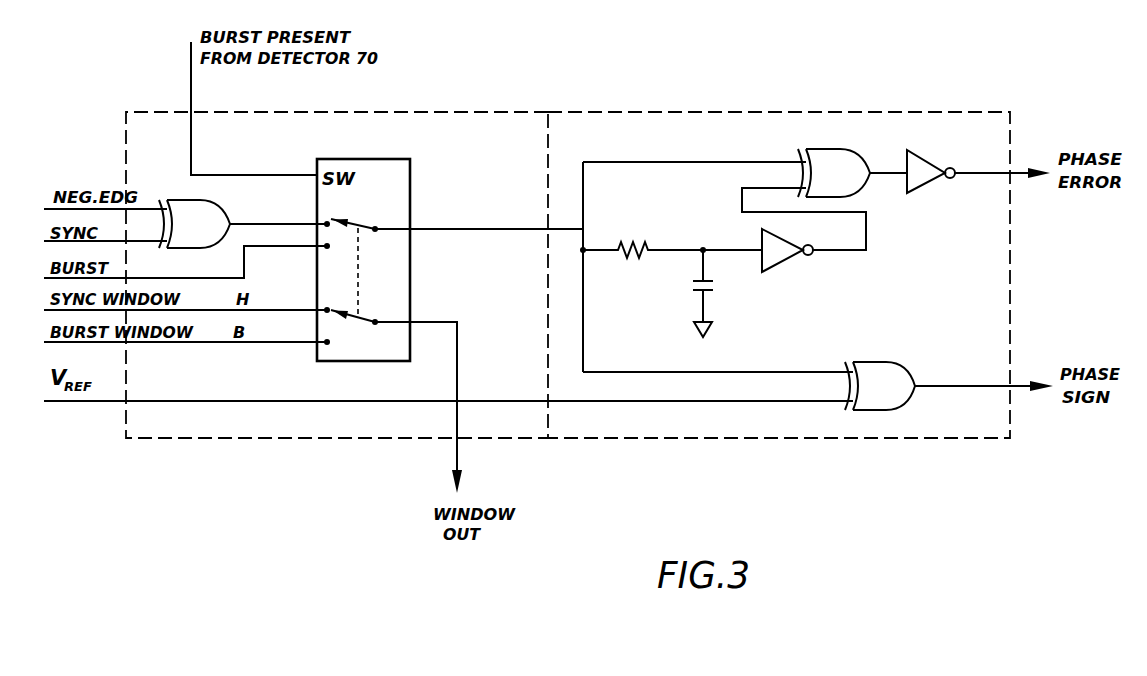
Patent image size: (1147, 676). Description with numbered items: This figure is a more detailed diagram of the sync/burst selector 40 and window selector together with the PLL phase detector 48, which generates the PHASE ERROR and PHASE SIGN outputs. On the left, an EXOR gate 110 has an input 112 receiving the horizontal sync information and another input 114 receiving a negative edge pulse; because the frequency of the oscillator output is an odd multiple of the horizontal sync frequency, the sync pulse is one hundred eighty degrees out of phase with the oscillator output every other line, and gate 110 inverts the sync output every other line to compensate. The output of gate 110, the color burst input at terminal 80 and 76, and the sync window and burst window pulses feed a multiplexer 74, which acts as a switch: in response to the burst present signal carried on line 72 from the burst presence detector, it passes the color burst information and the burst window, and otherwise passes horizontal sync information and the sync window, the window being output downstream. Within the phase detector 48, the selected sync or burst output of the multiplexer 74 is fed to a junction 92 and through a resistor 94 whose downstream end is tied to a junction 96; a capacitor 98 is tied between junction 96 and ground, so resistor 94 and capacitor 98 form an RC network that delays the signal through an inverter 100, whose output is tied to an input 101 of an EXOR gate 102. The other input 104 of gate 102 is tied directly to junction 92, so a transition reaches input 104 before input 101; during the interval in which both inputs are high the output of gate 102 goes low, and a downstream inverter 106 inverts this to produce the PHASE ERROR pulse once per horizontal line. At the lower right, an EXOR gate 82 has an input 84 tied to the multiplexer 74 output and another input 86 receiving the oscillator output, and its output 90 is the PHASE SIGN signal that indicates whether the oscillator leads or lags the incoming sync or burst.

The sync/burst selector 40 is at (440, 110).
The phase detector 48 is at (750, 110).
The burst present input line 72 is at (213, 174).
The input 114 is at (158, 206).
The input 112 is at (150, 248).
The EXOR gate 110 is at (217, 211).
The switch input terminal 80 is at (312, 218).
The burst input terminal 76 is at (310, 252).
The multiplexer 74 is at (411, 278).
The junction 92 is at (587, 230).
The resistor 94 is at (628, 245).
The junction 96 is at (725, 229).
The capacitor 98 is at (697, 290).
The inverter 100 is at (774, 266).
The input 101 is at (800, 187).
The input 104 is at (801, 161).
The EXOR gate 102 is at (826, 149).
The inverter 106 is at (937, 159).
The input 84 is at (845, 369).
The input 86 is at (840, 402).
The EXOR gate 82 is at (880, 362).
The phase sign output 90 is at (918, 385).